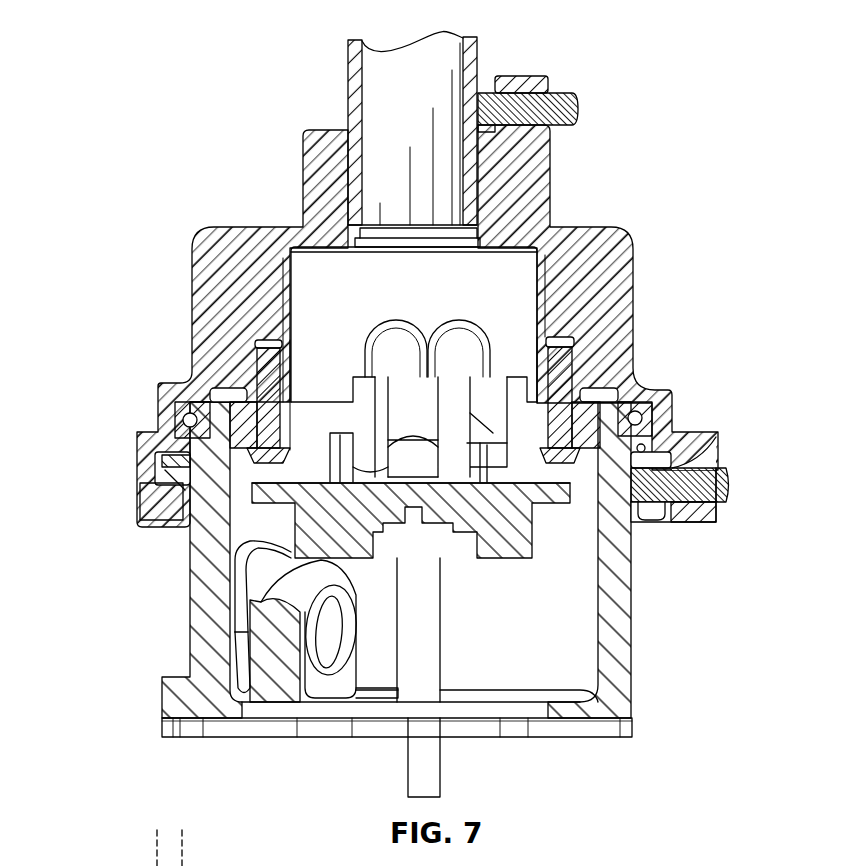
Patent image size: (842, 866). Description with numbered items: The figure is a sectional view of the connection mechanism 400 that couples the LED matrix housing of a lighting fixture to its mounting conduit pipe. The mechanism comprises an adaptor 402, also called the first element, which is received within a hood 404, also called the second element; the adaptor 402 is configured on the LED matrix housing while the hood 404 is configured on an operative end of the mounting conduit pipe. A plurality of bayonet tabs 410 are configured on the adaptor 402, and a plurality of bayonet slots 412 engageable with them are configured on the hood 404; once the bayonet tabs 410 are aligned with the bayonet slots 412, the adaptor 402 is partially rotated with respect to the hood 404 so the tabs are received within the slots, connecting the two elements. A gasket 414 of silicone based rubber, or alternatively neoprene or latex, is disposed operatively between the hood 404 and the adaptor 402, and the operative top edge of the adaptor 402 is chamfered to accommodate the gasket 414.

The connection mechanism 400 is at (233, 53).
The adaptor 402 is at (621, 617).
The hood 404 is at (626, 271).
The bayonet tabs 410 is at (135, 502).
The bayonet slots 412 is at (692, 441).
The gasket 414 is at (640, 409).